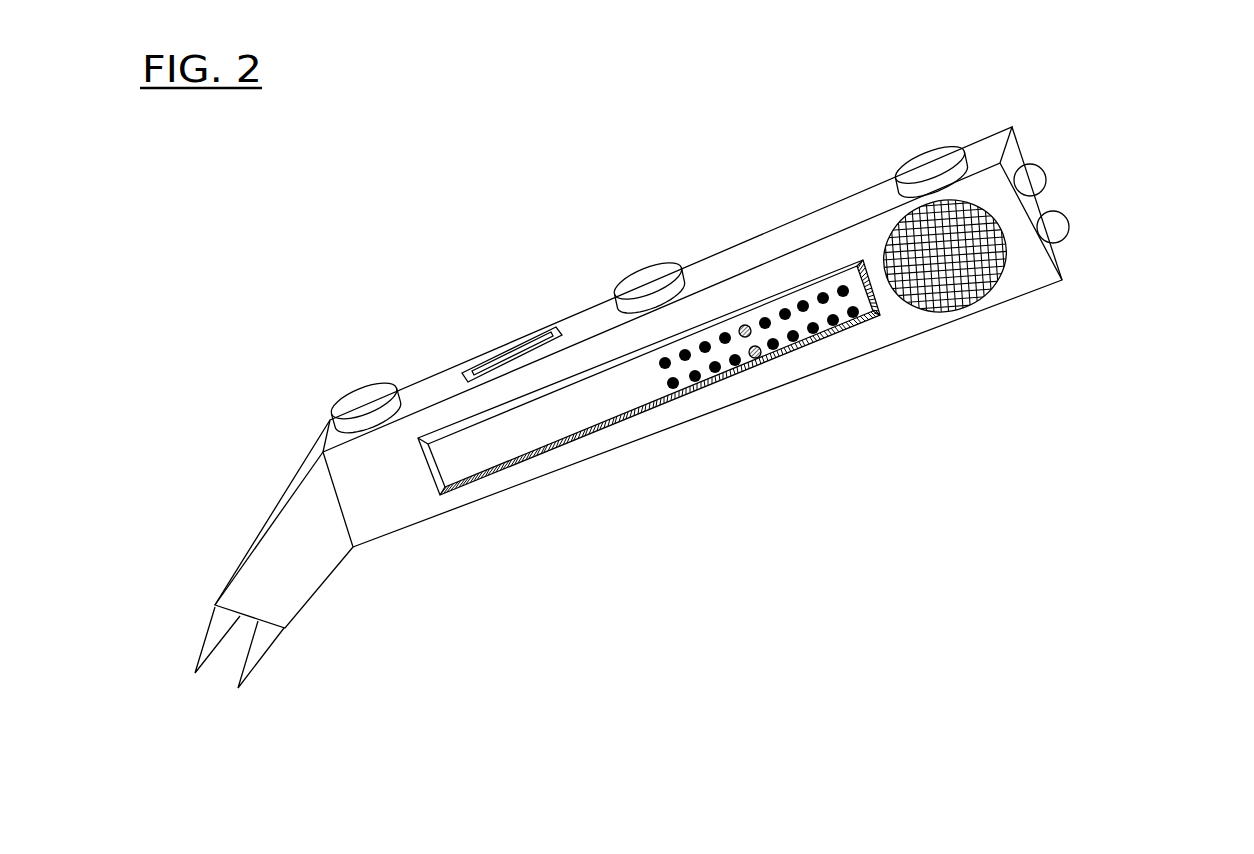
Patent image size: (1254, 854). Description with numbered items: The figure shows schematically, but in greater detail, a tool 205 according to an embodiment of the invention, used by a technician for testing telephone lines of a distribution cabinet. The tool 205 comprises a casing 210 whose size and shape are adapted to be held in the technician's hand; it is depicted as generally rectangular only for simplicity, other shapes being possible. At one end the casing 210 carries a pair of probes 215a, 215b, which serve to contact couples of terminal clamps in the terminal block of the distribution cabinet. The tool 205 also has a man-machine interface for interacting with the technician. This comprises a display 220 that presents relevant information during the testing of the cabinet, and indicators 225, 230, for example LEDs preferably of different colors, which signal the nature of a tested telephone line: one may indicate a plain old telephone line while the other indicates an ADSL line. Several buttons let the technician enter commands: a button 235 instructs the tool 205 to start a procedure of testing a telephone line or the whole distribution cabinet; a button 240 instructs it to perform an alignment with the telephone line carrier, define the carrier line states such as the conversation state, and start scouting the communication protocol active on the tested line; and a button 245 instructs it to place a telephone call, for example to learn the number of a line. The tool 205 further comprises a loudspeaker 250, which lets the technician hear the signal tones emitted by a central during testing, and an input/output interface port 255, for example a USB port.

The tool 205 is at (278, 197).
The casing 210 is at (598, 457).
The probe 215a is at (267, 653).
The probe 215b is at (207, 638).
The display 220 is at (713, 388).
The indicator 225 is at (1032, 177).
The indicator 230 is at (1063, 228).
The button 235 is at (352, 406).
The button 240 is at (635, 284).
The button 245 is at (918, 162).
The loudspeaker 250 is at (970, 303).
The input/output interface port 255 is at (497, 355).